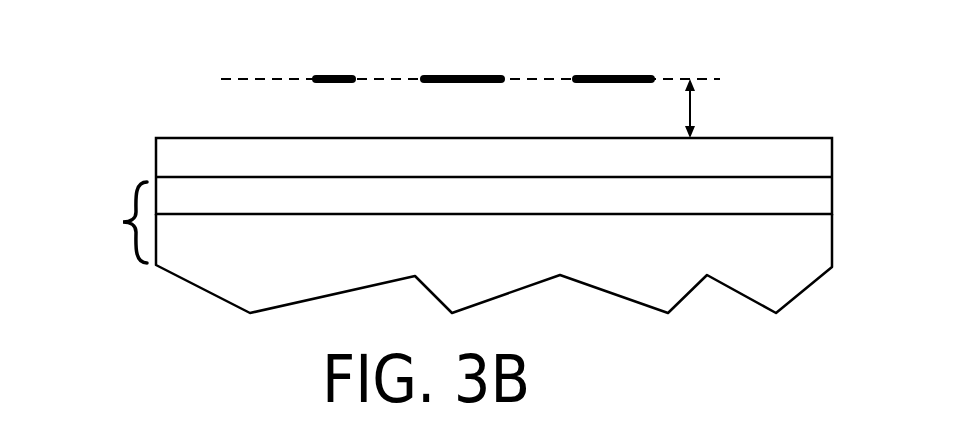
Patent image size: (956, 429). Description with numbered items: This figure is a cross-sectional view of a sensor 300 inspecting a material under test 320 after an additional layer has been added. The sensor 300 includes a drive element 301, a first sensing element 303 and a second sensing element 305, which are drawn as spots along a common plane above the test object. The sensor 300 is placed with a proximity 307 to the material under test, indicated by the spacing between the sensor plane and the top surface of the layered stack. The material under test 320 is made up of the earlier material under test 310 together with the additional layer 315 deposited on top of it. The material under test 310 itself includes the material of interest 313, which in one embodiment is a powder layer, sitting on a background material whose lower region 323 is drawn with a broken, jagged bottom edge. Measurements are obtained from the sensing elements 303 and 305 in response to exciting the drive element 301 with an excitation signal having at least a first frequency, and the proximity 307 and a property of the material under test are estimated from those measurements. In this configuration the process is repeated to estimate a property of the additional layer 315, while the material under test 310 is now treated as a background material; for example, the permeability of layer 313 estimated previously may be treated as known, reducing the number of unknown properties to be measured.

The sensor 300 is at (713, 73).
The drive element 301 is at (336, 64).
The first sensing element 303 is at (464, 64).
The second sensing element 305 is at (614, 64).
The proximity 307 is at (703, 111).
The material under test 310 is at (101, 222).
The material of interest 313 is at (225, 210).
The additional layer 315 is at (225, 172).
The material under test 320 is at (137, 157).
The base substrate layer 323 is at (221, 258).